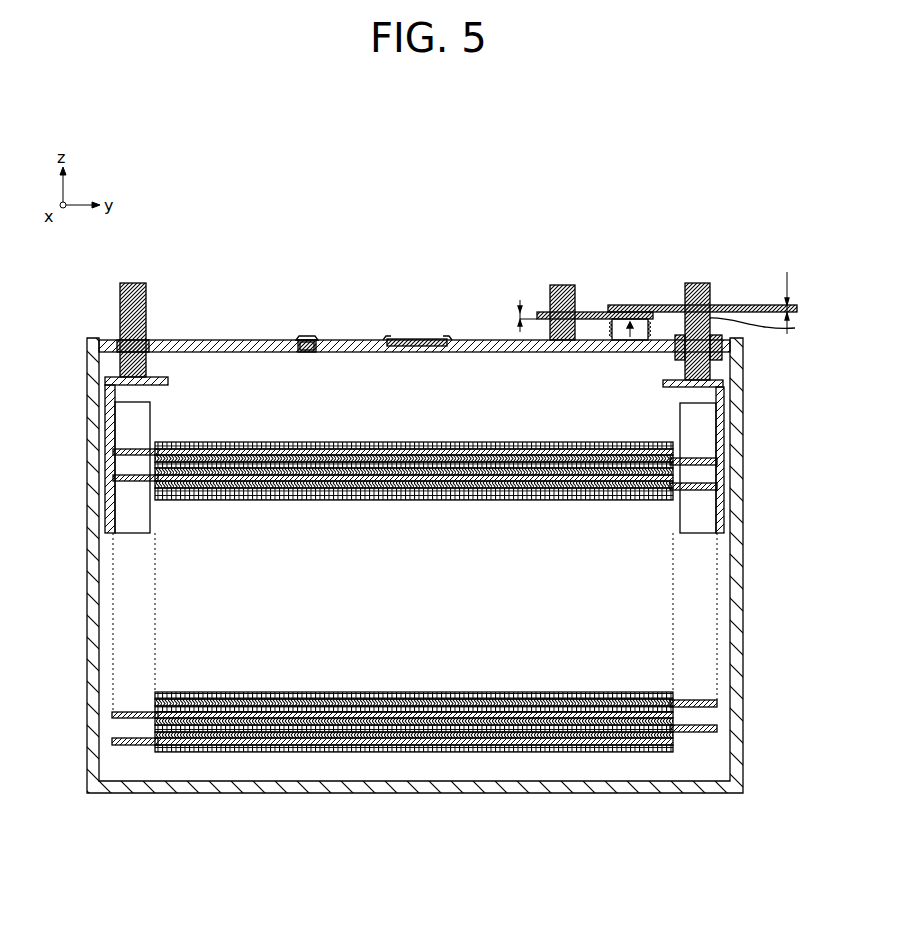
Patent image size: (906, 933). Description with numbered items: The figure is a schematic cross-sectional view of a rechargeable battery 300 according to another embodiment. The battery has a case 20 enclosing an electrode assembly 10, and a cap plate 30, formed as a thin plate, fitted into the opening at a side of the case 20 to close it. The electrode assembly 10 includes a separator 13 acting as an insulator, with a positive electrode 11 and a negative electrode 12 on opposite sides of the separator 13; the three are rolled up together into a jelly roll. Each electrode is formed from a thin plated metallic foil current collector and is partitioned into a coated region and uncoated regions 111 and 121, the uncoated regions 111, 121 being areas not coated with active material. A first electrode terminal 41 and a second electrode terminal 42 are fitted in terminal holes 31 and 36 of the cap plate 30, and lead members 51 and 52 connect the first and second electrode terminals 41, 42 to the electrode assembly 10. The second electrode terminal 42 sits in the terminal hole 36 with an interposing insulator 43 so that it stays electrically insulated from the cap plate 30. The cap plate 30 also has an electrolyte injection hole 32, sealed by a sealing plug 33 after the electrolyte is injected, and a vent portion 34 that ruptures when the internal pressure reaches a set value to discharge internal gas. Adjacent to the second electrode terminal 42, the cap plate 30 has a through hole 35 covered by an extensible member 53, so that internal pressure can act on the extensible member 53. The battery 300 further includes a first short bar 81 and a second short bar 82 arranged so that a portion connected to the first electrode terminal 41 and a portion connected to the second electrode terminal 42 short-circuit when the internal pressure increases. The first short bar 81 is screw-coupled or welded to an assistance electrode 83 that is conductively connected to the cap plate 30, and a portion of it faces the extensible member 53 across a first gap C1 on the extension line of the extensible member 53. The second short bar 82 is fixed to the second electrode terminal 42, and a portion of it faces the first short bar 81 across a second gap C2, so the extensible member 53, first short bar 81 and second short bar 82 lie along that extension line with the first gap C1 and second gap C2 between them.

The rechargeable battery 300 is at (606, 172).
The case 20 is at (735, 574).
The cap plate 30 is at (231, 340).
The terminal hole 31 is at (142, 326).
The electrolyte injection hole 32 is at (306, 352).
The sealing plug 33 is at (308, 337).
The vent portion 34 is at (422, 339).
The through hole 35 is at (639, 356).
The terminal hole 36 is at (795, 328).
The first electrode terminal 41 is at (135, 283).
The second electrode terminal 42 is at (697, 283).
The insulator 43 is at (720, 338).
The lead member 51 is at (108, 393).
The lead member 52 is at (728, 389).
The extensible member 53 is at (611, 342).
The first short bar 81 is at (590, 312).
The second short bar 82 is at (645, 305).
The assistance electrode 83 is at (562, 285).
The electrode assembly 10 is at (414, 649).
The positive electrode 11 is at (235, 747).
The negative electrode 12 is at (287, 727).
The separator 13 is at (413, 727).
The uncoated region 111 is at (133, 746).
The uncoated region 121 is at (690, 734).
The first gap C1 is at (509, 318).
The second gap C2 is at (804, 300).